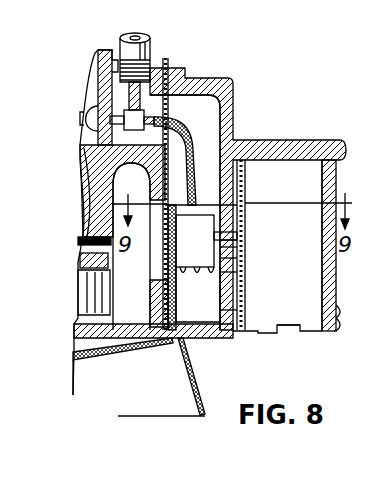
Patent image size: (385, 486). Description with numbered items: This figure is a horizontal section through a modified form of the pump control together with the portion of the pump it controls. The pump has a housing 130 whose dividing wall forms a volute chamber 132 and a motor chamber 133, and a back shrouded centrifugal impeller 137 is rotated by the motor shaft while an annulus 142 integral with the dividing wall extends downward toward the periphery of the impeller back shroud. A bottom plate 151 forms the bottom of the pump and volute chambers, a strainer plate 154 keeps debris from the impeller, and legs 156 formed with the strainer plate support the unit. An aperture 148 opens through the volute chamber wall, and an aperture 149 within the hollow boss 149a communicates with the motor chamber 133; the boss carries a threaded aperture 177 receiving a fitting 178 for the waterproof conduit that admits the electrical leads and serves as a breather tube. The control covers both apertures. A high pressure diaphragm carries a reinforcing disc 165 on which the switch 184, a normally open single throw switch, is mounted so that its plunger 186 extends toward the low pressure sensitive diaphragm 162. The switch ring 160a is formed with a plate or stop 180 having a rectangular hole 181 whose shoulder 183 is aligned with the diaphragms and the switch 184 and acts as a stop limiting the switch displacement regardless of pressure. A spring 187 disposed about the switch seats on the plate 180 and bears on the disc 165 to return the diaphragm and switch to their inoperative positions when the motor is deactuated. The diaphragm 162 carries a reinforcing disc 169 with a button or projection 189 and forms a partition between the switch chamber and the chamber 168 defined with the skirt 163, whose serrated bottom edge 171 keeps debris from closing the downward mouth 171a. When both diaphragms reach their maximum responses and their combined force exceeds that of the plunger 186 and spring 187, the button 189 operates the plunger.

The housing 130 is at (100, 53).
The motor chamber 133 is at (96, 77).
The fitting 178 is at (152, 46).
The hollow boss 149a is at (166, 67).
The threaded aperture 177 is at (198, 72).
The aperture 149 is at (165, 112).
The switch ring 160a is at (236, 120).
The reinforcing disc 165 is at (189, 175).
The annulus 142 is at (100, 195).
The volute chamber 132 is at (95, 215).
The aperture 148 is at (151, 262).
The back shrouded centrifugal impeller 137 is at (80, 262).
The switch 184 is at (199, 251).
The spring 187 is at (206, 290).
The shoulder 183 is at (245, 213).
The rectangular hole 181 is at (245, 226).
The plunger 186 is at (245, 240).
The button or projection 189 is at (246, 255).
The plate or stop 180 is at (246, 272).
The reinforcing disc 169 is at (246, 310).
The low pressure sensitive diaphragm 162 is at (248, 183).
The skirt 163 is at (333, 192).
The skirt chamber 168 is at (328, 286).
The serrated bottom edge 171 is at (302, 336).
The mouth 171a is at (286, 332).
The bottom plate 151 is at (74, 331).
The strainer plate 154 is at (73, 372).
The legs 156 is at (183, 374).